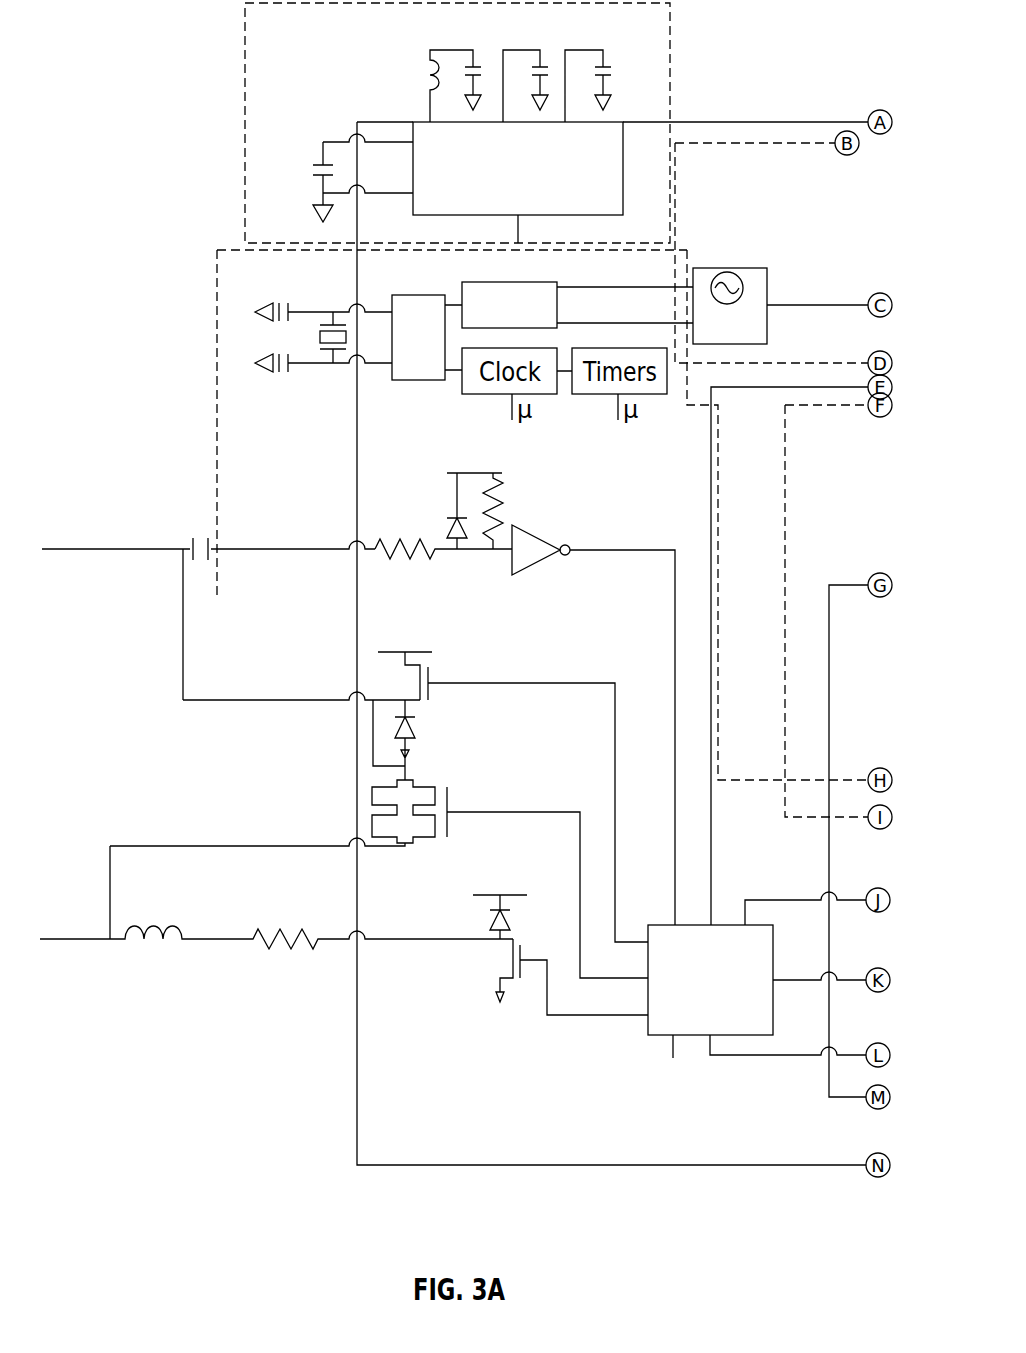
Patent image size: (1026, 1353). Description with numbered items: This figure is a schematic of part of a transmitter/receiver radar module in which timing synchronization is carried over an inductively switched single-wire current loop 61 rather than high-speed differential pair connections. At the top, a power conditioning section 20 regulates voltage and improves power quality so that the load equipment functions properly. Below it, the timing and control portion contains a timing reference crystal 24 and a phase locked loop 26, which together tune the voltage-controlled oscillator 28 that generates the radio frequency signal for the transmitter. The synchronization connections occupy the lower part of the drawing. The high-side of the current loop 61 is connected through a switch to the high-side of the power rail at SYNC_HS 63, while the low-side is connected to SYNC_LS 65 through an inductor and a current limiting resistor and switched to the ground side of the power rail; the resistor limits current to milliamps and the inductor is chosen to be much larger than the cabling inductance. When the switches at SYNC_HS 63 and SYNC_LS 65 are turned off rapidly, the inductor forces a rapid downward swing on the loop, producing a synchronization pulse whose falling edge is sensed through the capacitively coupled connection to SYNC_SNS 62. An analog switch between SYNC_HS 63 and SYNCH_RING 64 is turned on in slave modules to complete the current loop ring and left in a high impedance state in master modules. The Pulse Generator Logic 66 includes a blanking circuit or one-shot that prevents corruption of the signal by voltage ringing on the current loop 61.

The power conditioning section 20 is at (670, 73).
The timing reference crystal 24 is at (318, 305).
The phase locked loop 26 is at (508, 282).
The voltage-controlled oscillator 28 is at (735, 268).
The single-wire current loop 61 is at (128, 550).
The SYNC_SNS 62 is at (350, 512).
The SYNC_HS 63 is at (350, 657).
The SYNCH_RING 64 is at (350, 803).
The SYNC_LS 65 is at (236, 963).
The Pulse Generator Logic 66 is at (645, 1025).